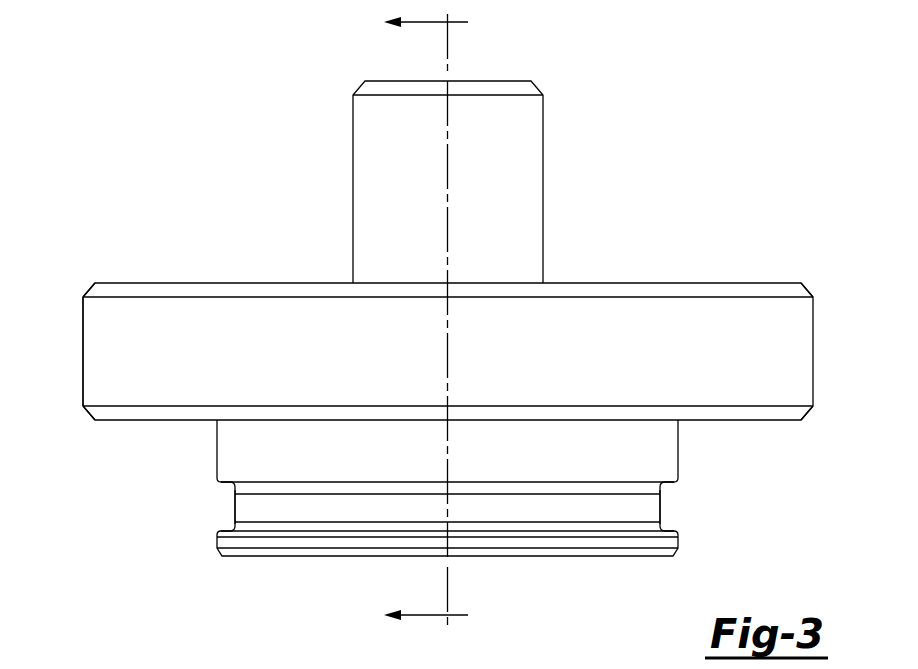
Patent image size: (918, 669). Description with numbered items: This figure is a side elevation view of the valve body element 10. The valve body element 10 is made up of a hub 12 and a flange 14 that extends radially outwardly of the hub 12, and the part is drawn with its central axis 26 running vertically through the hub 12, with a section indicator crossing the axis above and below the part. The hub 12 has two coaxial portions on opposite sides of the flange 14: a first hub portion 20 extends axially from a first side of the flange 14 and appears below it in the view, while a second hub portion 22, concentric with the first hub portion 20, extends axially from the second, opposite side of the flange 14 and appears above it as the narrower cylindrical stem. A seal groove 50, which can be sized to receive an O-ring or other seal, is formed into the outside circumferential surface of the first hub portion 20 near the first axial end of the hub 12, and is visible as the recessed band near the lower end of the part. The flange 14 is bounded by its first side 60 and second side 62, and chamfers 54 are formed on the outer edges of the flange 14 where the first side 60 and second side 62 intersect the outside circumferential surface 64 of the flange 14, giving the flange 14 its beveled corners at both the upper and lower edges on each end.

The valve body element 10 is at (626, 65).
The hub 12 is at (562, 558).
The flange 14 is at (152, 327).
The first hub portion 20 is at (655, 447).
The second hub portion 22 is at (378, 181).
The central axis 26 is at (447, 357).
The seal groove 50 is at (245, 508).
The chamfers 54 is at (770, 290).
The first side 60 is at (140, 420).
The second side 62 is at (140, 283).
The outside circumferential surface 64 is at (83, 373).